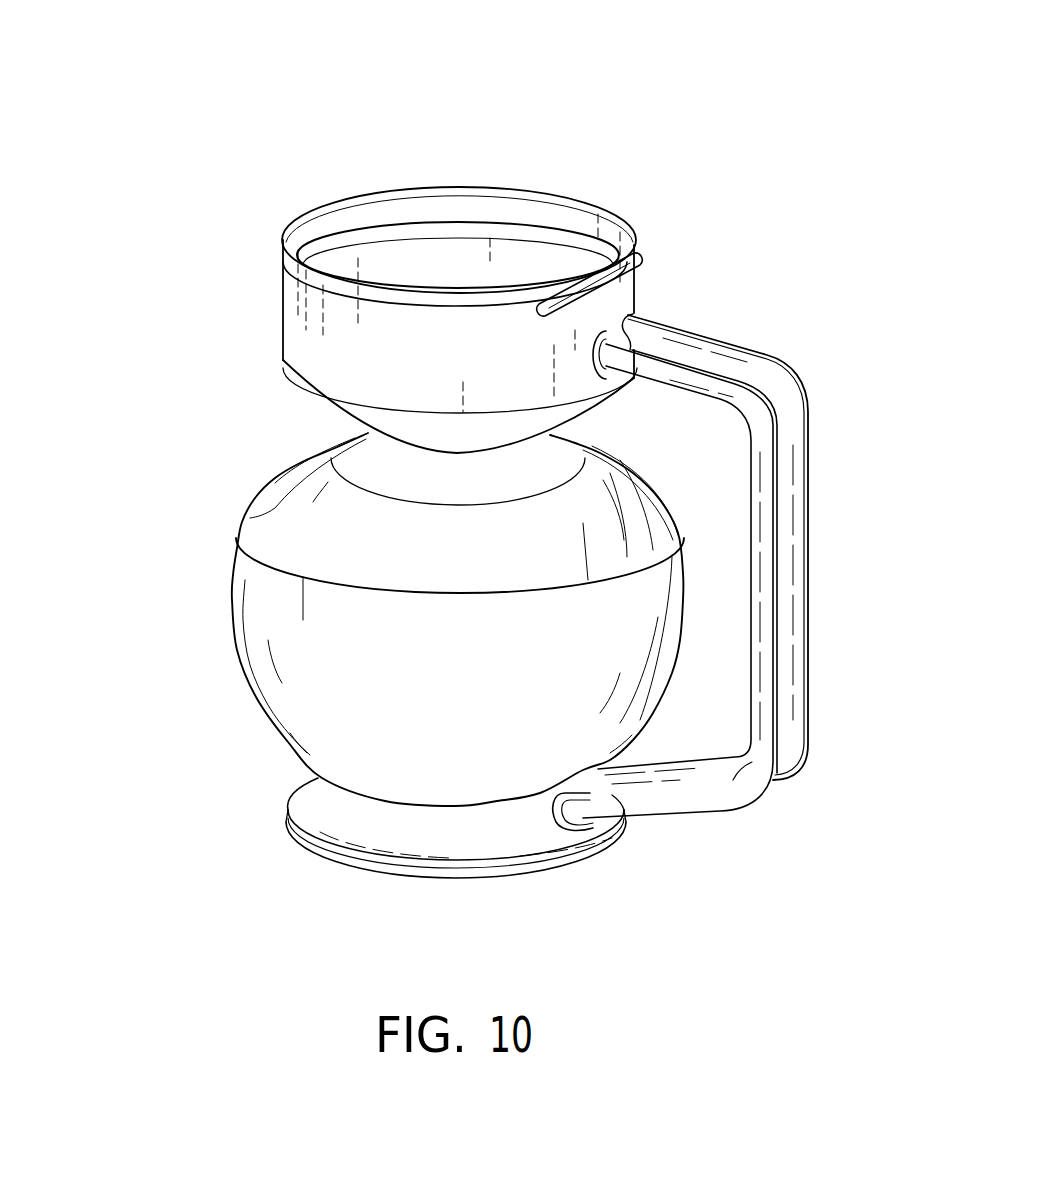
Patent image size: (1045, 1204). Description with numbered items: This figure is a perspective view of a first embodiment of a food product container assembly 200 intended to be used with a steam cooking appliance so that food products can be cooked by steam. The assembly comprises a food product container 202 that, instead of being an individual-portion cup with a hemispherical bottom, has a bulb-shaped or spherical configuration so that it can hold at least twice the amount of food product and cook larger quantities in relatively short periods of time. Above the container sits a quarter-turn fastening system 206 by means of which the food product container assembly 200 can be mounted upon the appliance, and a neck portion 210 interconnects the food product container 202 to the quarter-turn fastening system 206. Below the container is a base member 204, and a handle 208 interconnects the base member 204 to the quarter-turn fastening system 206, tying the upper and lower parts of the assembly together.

The food product container assembly 200 is at (758, 210).
The food product container 202 is at (235, 553).
The base member 204 is at (367, 870).
The quarter-turn fastening system 206 is at (547, 193).
The handle 208 is at (793, 563).
The neck portion 210 is at (560, 436).